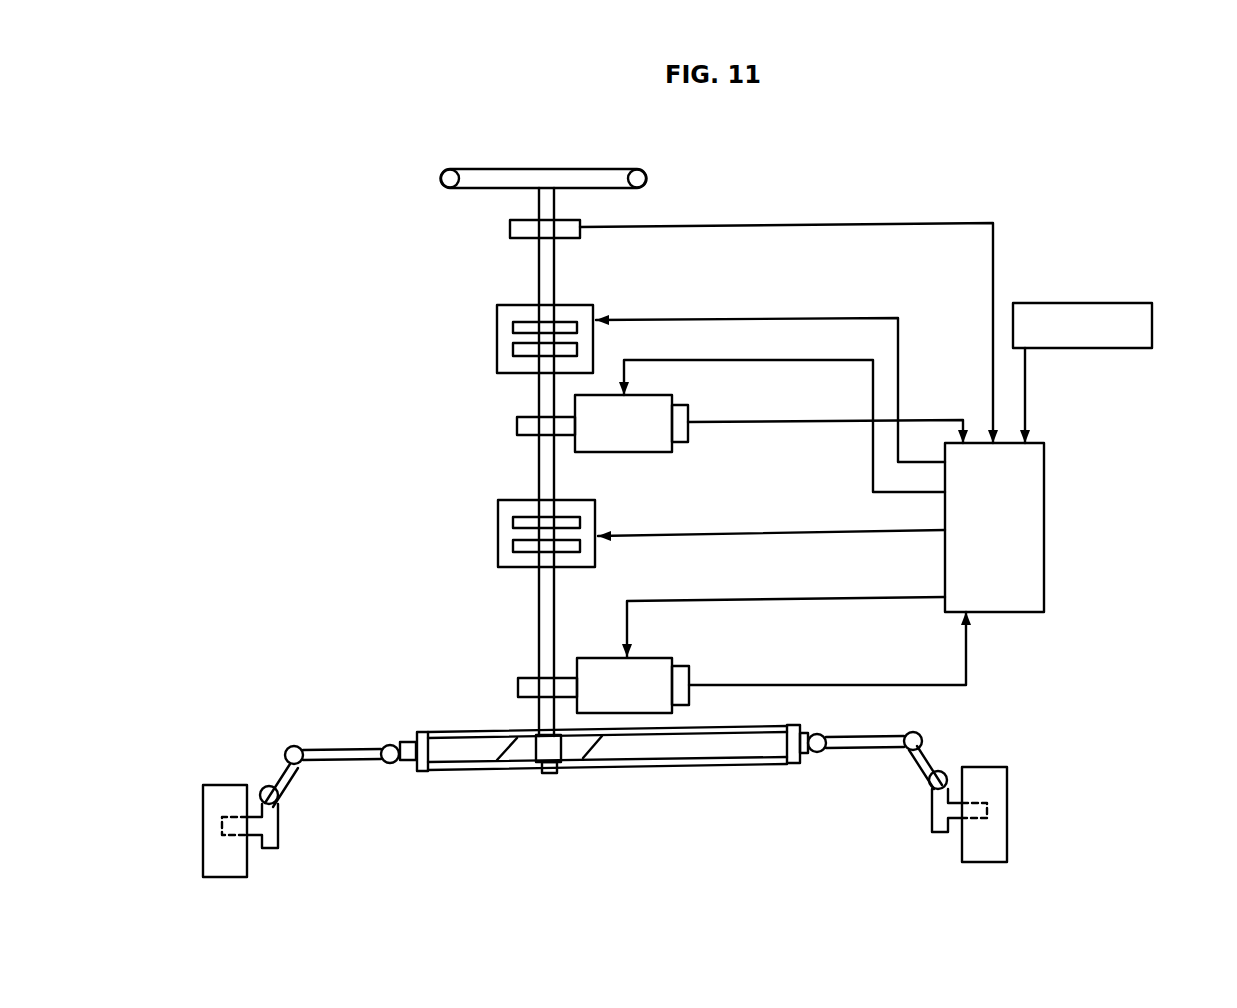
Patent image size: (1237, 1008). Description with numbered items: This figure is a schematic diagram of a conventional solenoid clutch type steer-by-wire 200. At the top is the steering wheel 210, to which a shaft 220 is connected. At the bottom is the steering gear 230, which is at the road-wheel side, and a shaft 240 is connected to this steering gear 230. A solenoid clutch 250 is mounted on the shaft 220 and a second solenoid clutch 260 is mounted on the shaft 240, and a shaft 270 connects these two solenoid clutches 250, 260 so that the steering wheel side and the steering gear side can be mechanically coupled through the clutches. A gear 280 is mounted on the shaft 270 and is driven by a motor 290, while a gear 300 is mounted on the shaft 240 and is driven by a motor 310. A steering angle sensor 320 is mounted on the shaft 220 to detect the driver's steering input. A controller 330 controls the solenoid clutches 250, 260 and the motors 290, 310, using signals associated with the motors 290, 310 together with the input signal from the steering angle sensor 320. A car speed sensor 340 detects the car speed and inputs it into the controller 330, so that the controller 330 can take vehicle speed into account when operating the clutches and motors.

The solenoid clutch type steer-by-wire 200 is at (870, 195).
The steering wheel 210 is at (472, 168).
The shaft 220 is at (539, 270).
The steering gear 230 is at (591, 770).
The shaft 240 is at (539, 618).
The solenoid clutch 250 is at (497, 343).
The solenoid clutch 260 is at (498, 535).
The shaft 270 is at (539, 470).
The gear 280 is at (517, 424).
The motor 290 is at (651, 453).
The gear 300 is at (518, 688).
The motor 310 is at (596, 656).
The steering angle sensor 320 is at (510, 229).
The controller 330 is at (1044, 518).
The car speed sensor 340 is at (1085, 303).